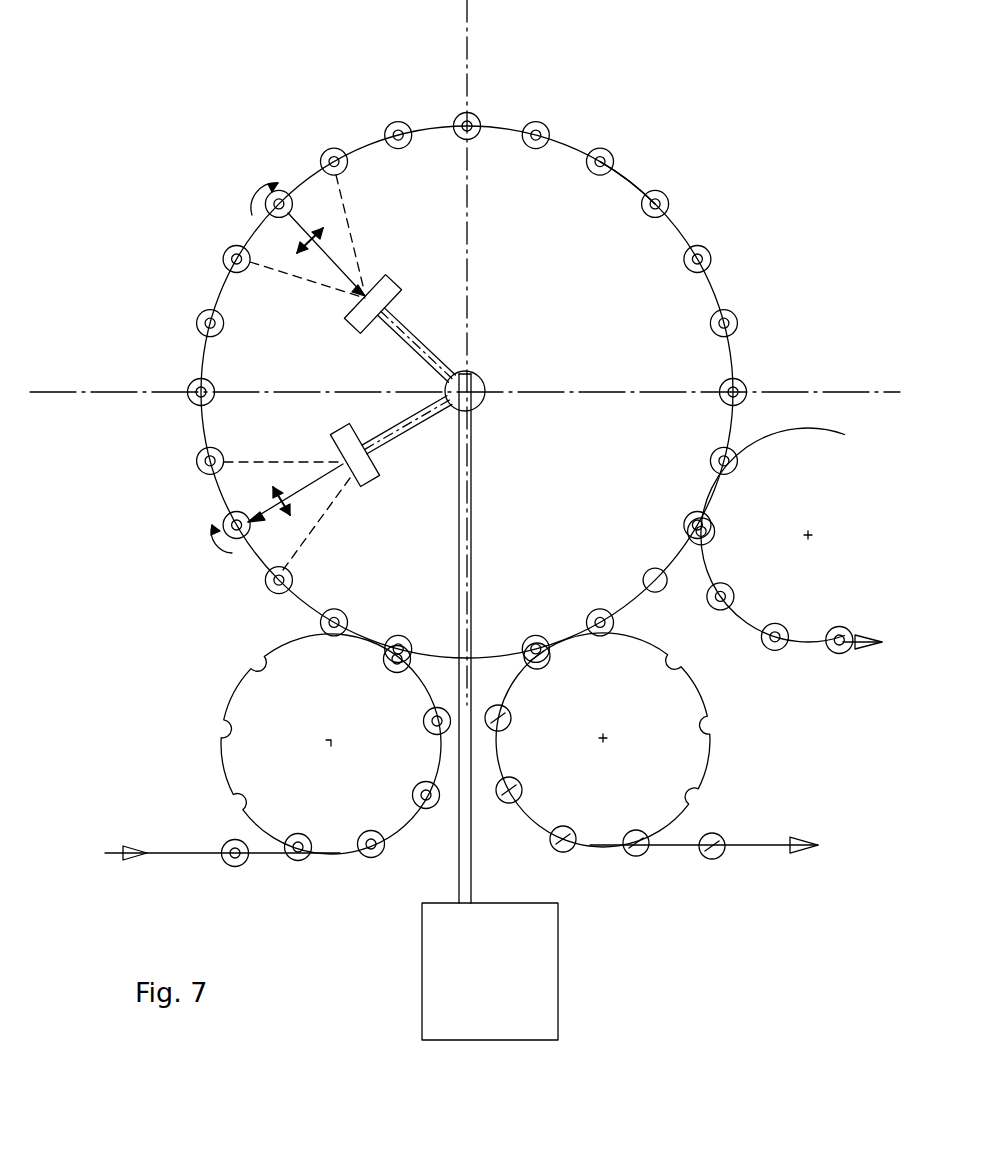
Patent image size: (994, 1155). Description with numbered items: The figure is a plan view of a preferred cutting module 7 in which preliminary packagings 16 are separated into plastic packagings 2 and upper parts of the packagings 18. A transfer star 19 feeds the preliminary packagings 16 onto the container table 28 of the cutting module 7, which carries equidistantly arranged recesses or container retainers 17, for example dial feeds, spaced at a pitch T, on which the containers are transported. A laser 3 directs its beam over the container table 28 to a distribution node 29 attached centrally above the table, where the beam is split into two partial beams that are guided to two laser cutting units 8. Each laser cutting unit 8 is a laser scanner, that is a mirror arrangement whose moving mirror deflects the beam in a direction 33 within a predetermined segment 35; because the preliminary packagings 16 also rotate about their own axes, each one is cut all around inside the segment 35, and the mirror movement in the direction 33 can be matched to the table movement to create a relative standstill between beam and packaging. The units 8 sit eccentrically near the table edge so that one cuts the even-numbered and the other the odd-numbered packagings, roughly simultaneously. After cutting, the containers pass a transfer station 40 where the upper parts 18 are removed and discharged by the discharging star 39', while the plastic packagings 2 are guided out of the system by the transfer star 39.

The cutting module 7 is at (225, 168).
The container table 28 is at (433, 125).
The container holder / treatment station 17 is at (603, 150).
The pitch division T is at (630, 167).
The transfer station 40 is at (730, 452).
The plastic packaging 2 is at (664, 588).
The distribution node 29 is at (485, 388).
The laser cutting unit 8 is at (355, 322).
The segment 35 is at (256, 502).
The direction 33 is at (308, 243).
The discharging star 39' is at (766, 535).
The upper part of the packaging 18 is at (835, 654).
The transfer star 19 is at (225, 758).
The preliminary packaging 16 is at (223, 857).
The transfer star 39 is at (651, 799).
The laser 3 is at (494, 992).